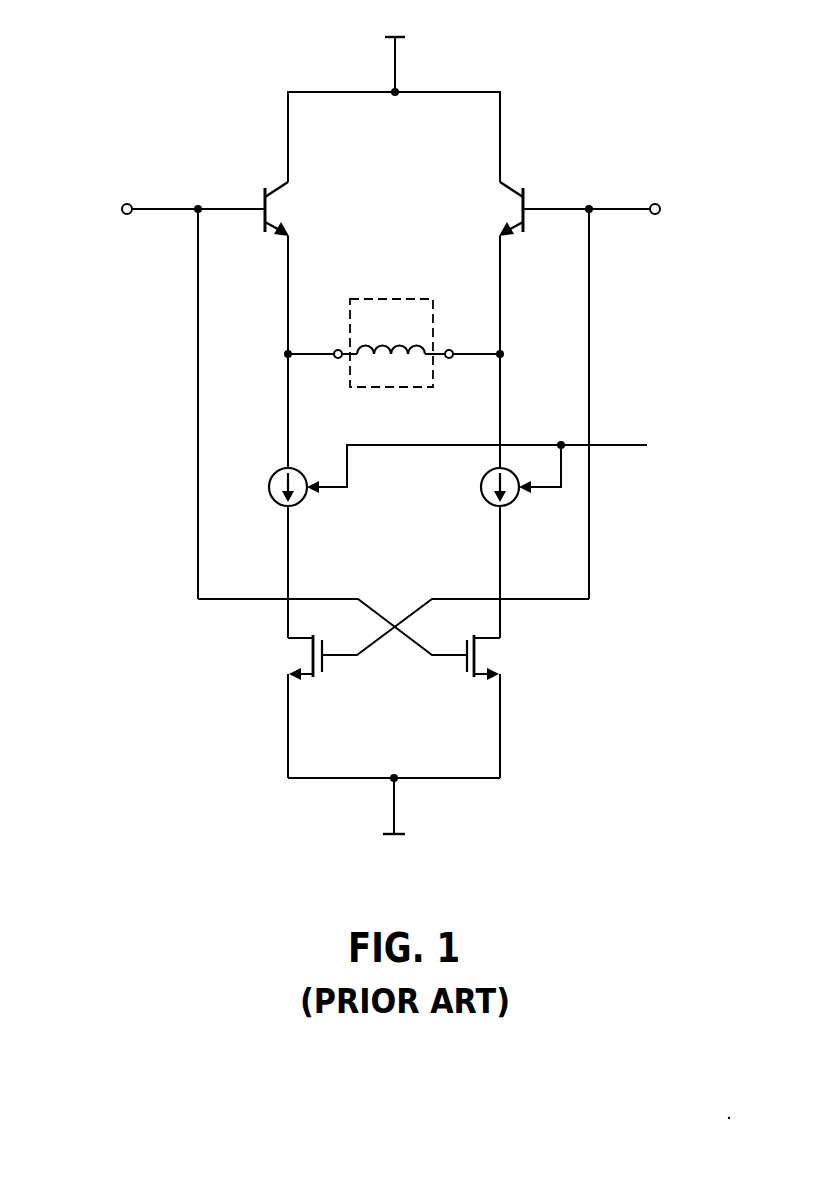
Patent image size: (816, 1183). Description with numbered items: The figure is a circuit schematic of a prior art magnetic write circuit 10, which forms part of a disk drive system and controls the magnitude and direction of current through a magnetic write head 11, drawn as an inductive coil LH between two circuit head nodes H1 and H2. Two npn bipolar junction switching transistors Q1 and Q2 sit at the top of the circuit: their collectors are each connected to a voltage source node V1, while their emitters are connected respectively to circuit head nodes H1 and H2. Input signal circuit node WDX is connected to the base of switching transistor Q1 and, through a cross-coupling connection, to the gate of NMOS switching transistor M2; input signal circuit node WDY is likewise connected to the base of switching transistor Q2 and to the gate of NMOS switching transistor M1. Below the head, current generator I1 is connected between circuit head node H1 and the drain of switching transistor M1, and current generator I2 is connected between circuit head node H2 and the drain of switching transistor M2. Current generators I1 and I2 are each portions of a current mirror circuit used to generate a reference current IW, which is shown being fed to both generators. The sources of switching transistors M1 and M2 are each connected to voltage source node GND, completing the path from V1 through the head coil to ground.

The prior art magnetic write circuit 10 is at (172, 69).
The magnetic write head 11 is at (403, 299).
The voltage source node V1 is at (399, 51).
The switching transistor Q1 is at (260, 209).
The switching transistor Q2 is at (560, 209).
The input signal circuit node WDX is at (125, 209).
The input signal circuit node WDY is at (659, 209).
The circuit head node H1 is at (322, 340).
The circuit head node H2 is at (462, 340).
The inductive coil LH is at (391, 330).
The current generator I1 is at (274, 487).
The current generator I2 is at (482, 487).
The reference current IW is at (493, 461).
The switching transistor M1 is at (285, 706).
The switching transistor M2 is at (504, 706).
The voltage source node GND is at (395, 822).